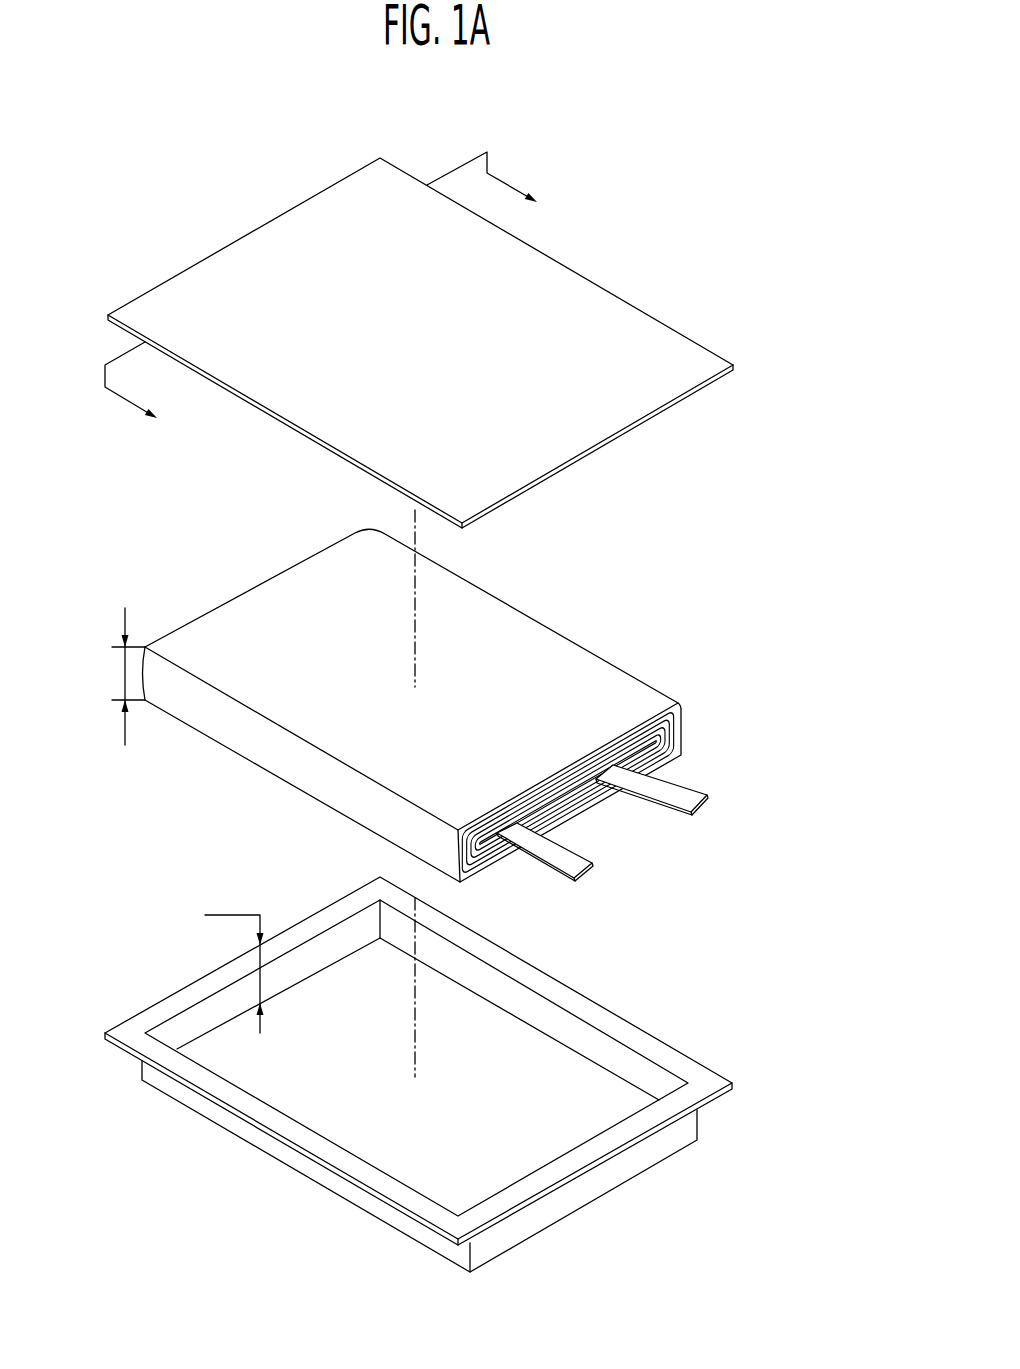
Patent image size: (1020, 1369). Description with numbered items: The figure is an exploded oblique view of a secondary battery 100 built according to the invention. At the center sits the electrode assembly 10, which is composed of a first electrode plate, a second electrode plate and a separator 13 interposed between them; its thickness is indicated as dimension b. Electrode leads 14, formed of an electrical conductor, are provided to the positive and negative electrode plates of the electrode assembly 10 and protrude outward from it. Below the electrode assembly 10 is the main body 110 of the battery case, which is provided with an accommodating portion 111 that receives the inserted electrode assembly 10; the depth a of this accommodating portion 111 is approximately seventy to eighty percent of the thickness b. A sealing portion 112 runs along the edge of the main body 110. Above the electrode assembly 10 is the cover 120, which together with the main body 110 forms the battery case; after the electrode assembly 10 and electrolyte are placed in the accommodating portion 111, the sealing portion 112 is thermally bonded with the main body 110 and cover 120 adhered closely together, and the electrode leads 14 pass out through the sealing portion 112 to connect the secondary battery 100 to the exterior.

The secondary battery 100 is at (193, 165).
The cover 120 is at (587, 254).
The electrode assembly 10 is at (438, 701).
The separator 13 is at (607, 682).
The electrode leads 14 is at (688, 793).
The main body 110 is at (452, 1074).
The sealing portion 112 is at (647, 1042).
The accommodating portion 111 is at (498, 1133).